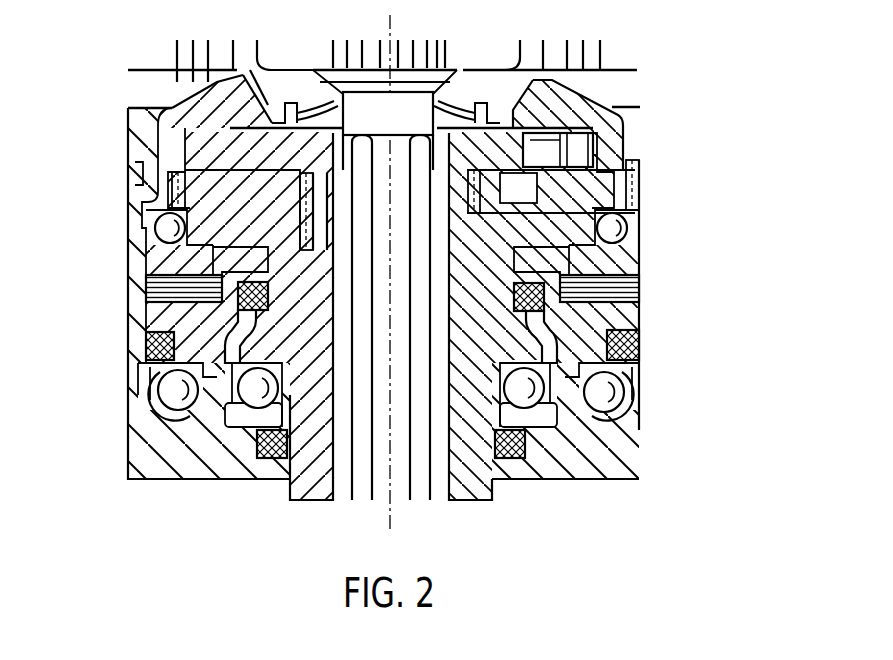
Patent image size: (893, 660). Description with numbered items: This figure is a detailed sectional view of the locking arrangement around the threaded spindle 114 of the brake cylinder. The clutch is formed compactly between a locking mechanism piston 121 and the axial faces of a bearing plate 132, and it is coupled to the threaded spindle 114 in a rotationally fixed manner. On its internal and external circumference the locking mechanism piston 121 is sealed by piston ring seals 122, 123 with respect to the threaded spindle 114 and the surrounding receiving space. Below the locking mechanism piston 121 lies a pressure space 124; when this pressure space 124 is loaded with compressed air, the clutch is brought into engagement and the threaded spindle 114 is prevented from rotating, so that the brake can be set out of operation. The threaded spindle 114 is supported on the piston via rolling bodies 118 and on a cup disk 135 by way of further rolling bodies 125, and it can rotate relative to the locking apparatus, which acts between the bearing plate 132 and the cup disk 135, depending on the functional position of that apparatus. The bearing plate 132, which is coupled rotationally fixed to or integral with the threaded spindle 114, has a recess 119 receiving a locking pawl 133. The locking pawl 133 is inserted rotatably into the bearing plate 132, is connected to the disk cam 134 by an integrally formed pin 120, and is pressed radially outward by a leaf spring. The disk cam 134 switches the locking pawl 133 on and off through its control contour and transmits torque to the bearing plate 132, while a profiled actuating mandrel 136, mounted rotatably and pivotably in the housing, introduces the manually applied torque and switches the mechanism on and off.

The threaded spindle 114 is at (641, 345).
The rolling bodies 118 is at (553, 390).
The recess 119 is at (622, 270).
The pin 120 is at (510, 162).
The locking mechanism piston 121 is at (606, 314).
The piston ring seal 122 is at (506, 348).
The piston ring seal 123 is at (146, 350).
The pressure space 124 is at (235, 336).
The rolling bodies 125 is at (614, 230).
The bearing plate 132 is at (620, 284).
The locking pawl 133 is at (585, 192).
The disk cam 134 is at (642, 168).
The cup disk 135 is at (585, 102).
The actuating mandrel 136 is at (440, 103).